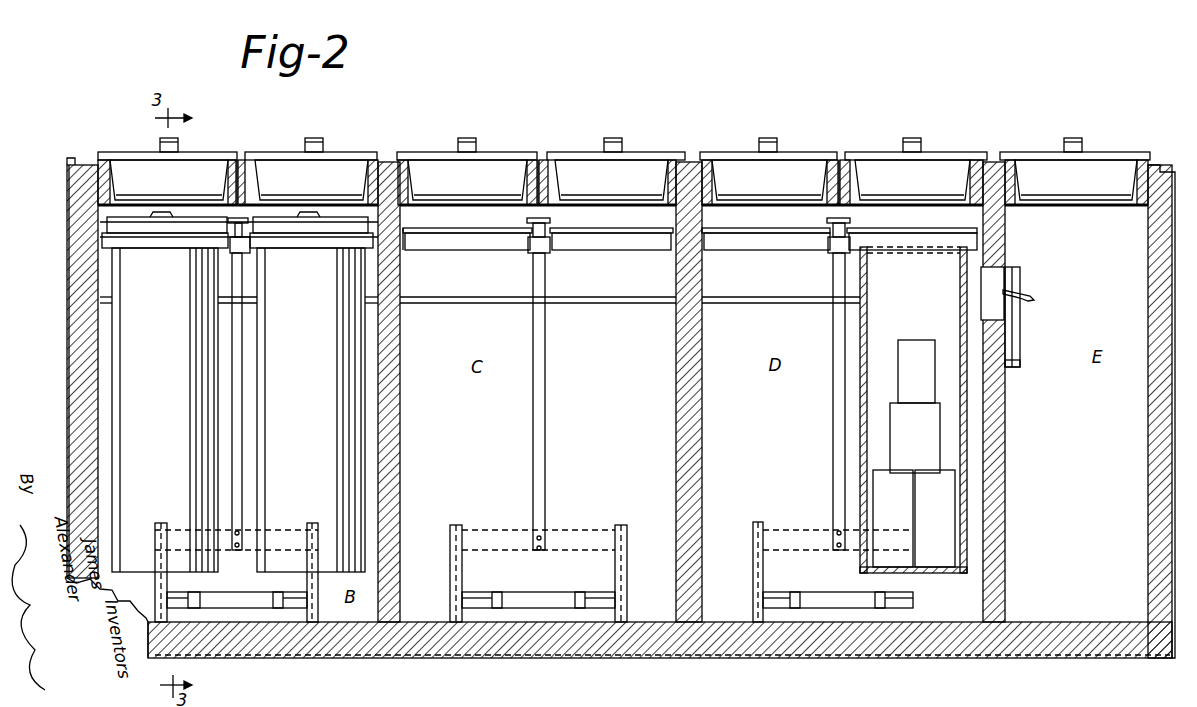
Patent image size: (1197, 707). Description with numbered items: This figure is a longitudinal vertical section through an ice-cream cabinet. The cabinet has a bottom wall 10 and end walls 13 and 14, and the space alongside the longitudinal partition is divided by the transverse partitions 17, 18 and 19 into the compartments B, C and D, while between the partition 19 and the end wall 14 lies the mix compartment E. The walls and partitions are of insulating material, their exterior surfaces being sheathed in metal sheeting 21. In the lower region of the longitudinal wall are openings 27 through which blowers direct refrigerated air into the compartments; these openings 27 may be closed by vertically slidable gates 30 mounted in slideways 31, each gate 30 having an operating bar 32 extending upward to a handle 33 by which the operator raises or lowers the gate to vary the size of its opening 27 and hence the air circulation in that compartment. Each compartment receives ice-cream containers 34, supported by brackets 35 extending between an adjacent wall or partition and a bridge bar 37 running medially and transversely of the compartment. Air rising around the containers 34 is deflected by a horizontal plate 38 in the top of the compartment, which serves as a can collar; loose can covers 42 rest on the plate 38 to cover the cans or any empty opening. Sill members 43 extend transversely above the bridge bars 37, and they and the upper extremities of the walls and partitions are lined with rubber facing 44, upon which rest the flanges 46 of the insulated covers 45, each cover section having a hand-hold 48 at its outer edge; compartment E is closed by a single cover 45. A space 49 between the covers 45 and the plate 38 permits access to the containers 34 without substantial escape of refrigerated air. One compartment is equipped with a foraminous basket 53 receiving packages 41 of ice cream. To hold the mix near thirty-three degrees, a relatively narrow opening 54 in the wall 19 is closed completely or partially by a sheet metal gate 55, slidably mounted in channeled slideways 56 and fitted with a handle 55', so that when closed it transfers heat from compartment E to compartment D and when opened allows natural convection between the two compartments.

The bottom wall 10 is at (626, 660).
The end wall 13 is at (82, 410).
The end wall 14 is at (1148, 402).
The transverse partition 17 is at (392, 431).
The transverse partition 18 is at (703, 403).
The transverse partition 19 is at (1004, 460).
The metal sheeting 21 is at (67, 333).
The openings 27 is at (272, 660).
The gates 30 is at (534, 556).
The slideways 31 is at (157, 587).
The operating bar 32 is at (243, 362).
The handle 33 is at (246, 222).
The ice-cream containers 34 is at (238, 410).
The brackets 35 is at (470, 250).
The bridge bar 37 is at (250, 252).
The horizontal plate 38 is at (470, 228).
The packages 41 is at (905, 356).
The can cover 42 is at (172, 222).
The sill members 43 is at (234, 182).
The rubber facing 44 is at (92, 160).
The insulated covers 45 is at (623, 180).
The flanges 46 is at (112, 152).
The hand-hold 48 is at (178, 141).
The space 49 is at (422, 210).
The foraminous basket 53 is at (862, 415).
The opening 54 is at (985, 275).
The sheet metal gate 55 is at (1044, 317).
The handle 55' is at (1051, 290).
The channeled slideways 56 is at (1020, 364).